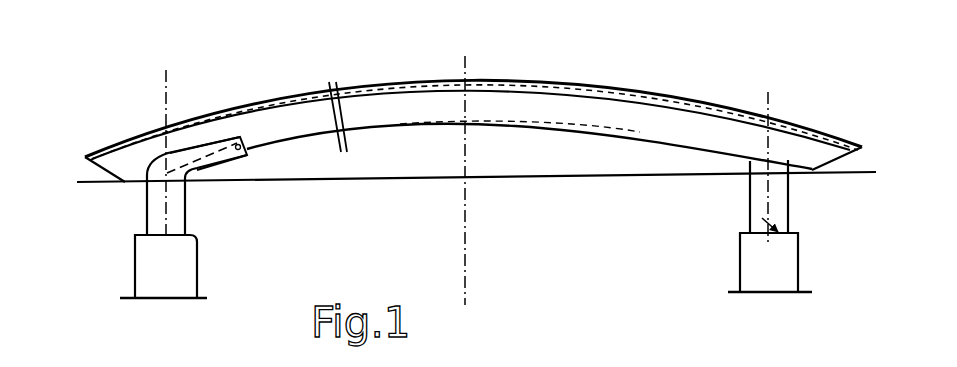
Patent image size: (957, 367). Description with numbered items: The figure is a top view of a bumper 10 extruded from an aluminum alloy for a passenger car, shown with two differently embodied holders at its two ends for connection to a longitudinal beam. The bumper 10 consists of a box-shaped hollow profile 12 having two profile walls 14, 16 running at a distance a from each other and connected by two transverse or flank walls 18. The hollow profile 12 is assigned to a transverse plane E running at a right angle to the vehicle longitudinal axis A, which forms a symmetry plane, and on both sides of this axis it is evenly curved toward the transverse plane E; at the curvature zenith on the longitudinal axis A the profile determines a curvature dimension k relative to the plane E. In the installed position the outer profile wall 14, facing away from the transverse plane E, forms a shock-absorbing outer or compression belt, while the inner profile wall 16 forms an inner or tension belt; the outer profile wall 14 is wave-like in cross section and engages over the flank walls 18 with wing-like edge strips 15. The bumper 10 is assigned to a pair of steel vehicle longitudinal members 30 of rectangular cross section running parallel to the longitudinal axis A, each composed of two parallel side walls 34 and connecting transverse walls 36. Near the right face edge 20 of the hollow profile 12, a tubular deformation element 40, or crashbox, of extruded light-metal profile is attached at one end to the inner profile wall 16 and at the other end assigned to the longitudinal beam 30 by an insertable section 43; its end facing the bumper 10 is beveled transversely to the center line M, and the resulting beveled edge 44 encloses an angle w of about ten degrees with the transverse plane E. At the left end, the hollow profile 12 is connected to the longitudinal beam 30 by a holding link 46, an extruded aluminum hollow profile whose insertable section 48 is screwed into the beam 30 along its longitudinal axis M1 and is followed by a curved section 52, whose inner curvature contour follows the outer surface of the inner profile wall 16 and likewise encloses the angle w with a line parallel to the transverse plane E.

The bumper 10 is at (220, 81).
The hollow profile 12 is at (315, 124).
The outer profile wall 14 is at (568, 82).
The edge strip 15 is at (616, 356).
The inner profile wall 16 is at (557, 128).
The transverse or flank wall 18 is at (703, 138).
The right face edge 20 is at (839, 173).
The vehicle longitudinal member 30 is at (173, 283).
The side wall 34 is at (135, 278).
The transverse wall 36 is at (174, 268).
The deformation element 40 is at (786, 236).
The insertable section 43 is at (748, 234).
The beveled edge 44 is at (779, 158).
The holding link 46 is at (196, 205).
The insertable section 48 is at (170, 230).
The curved section 52 is at (142, 163).
The transverse plane E is at (88, 184).
The vehicle longitudinal axis A is at (466, 280).
The center line M is at (766, 90).
The longitudinal axis M1 is at (164, 78).
The distance a is at (400, 44).
The curvature dimension k is at (400, 125).
The angle w is at (633, 106).